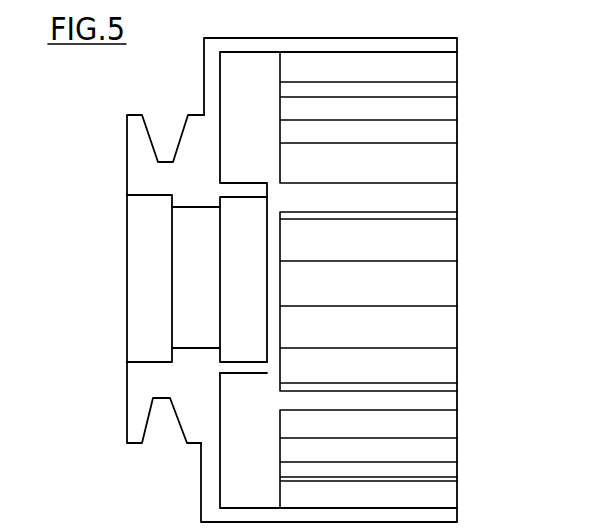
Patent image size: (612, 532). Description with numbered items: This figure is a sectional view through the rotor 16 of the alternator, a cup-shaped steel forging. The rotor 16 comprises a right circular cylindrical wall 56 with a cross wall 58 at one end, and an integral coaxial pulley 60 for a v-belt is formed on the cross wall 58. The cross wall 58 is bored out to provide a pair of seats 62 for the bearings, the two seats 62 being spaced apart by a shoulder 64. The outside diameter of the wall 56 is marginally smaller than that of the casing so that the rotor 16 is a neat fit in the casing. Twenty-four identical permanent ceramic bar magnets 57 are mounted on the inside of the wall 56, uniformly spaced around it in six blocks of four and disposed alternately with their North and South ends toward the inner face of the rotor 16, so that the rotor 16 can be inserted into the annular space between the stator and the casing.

The rotor 16 is at (150, 482).
The right circular cylindrical wall 56 is at (418, 45).
The permanent ceramic bar magnets 57 is at (440, 325).
The cross wall 58 is at (212, 85).
The pulley 60 is at (140, 143).
The seats 62 is at (245, 197).
The shoulder 64 is at (193, 348).